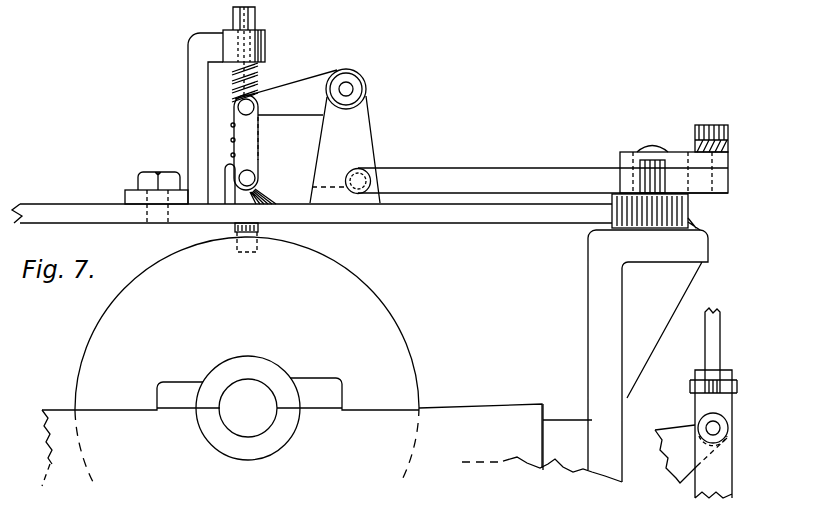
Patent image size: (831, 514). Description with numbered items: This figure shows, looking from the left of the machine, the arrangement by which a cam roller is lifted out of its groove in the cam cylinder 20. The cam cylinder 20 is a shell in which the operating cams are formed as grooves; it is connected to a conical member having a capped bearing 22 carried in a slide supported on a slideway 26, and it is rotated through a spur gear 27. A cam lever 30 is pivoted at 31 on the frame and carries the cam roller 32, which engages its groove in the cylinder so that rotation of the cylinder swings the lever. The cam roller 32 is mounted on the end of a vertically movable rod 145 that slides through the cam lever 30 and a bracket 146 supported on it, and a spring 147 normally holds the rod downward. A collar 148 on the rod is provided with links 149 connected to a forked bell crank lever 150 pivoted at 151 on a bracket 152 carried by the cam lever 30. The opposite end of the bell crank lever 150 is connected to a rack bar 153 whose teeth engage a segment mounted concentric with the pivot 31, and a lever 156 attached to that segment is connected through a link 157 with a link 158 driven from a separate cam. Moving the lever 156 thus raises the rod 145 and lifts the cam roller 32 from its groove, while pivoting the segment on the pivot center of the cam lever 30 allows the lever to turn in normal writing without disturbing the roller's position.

The cam cylinder 20 is at (368, 313).
The capped bearing 22 is at (273, 377).
The slideway 26 is at (577, 401).
The spur gear 27 is at (480, 409).
The cam lever 30 is at (418, 222).
The pivot 31 is at (652, 147).
The cam roller 32 is at (260, 230).
The vertically movable rod 145 is at (257, 15).
The bracket 146 is at (195, 75).
The spring 147 is at (253, 78).
The collar 148 is at (263, 180).
The link 149 is at (253, 142).
The forked bell crank lever 150 is at (303, 90).
The pivot 151 is at (346, 91).
The bracket 152 is at (373, 142).
The rack bar 153 is at (488, 175).
The lever 156 is at (678, 153).
The link 157 is at (729, 146).
The link 158 is at (712, 333).